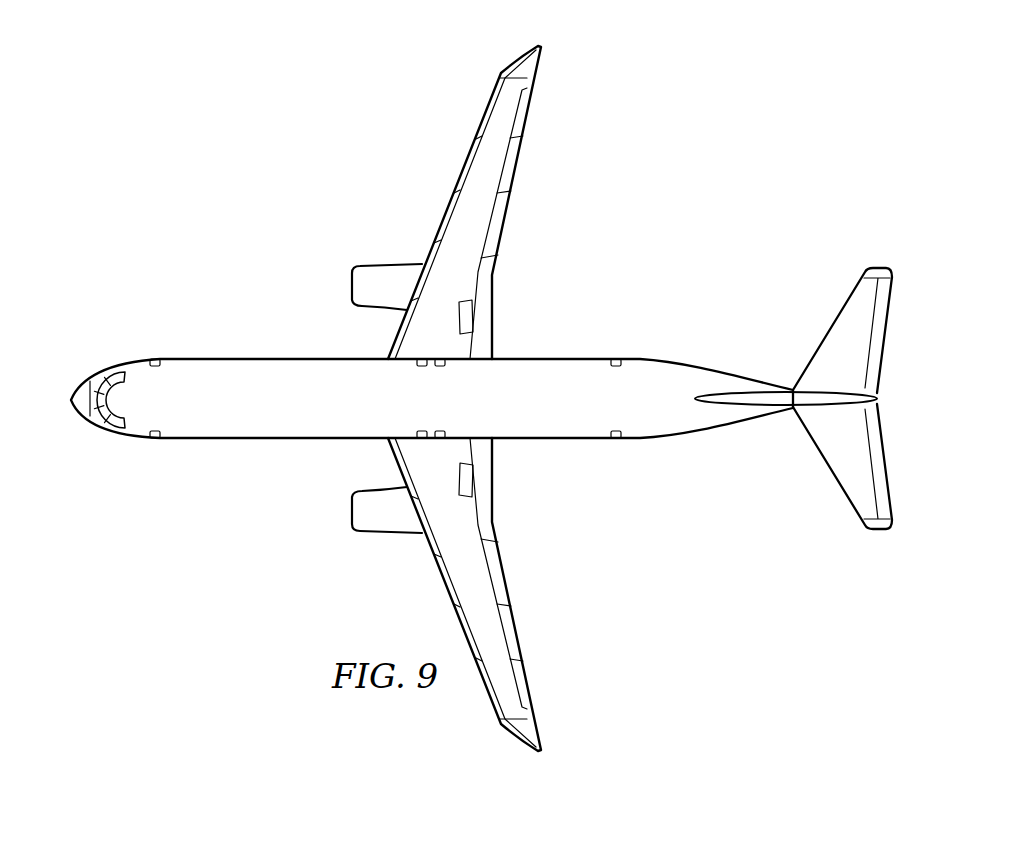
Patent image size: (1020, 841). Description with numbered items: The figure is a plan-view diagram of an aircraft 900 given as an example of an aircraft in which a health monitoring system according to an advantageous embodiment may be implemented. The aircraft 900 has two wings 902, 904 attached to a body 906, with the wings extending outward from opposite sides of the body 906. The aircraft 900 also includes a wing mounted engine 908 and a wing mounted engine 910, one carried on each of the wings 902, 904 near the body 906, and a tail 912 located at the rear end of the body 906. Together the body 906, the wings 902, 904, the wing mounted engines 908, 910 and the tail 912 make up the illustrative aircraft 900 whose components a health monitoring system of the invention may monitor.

The aircraft 900 is at (343, 176).
The wing 902 is at (440, 215).
The wing 904 is at (440, 580).
The body 906 is at (254, 358).
The wing mounted engine 908 is at (350, 282).
The wing mounted engine 910 is at (350, 515).
The tail 912 is at (876, 350).